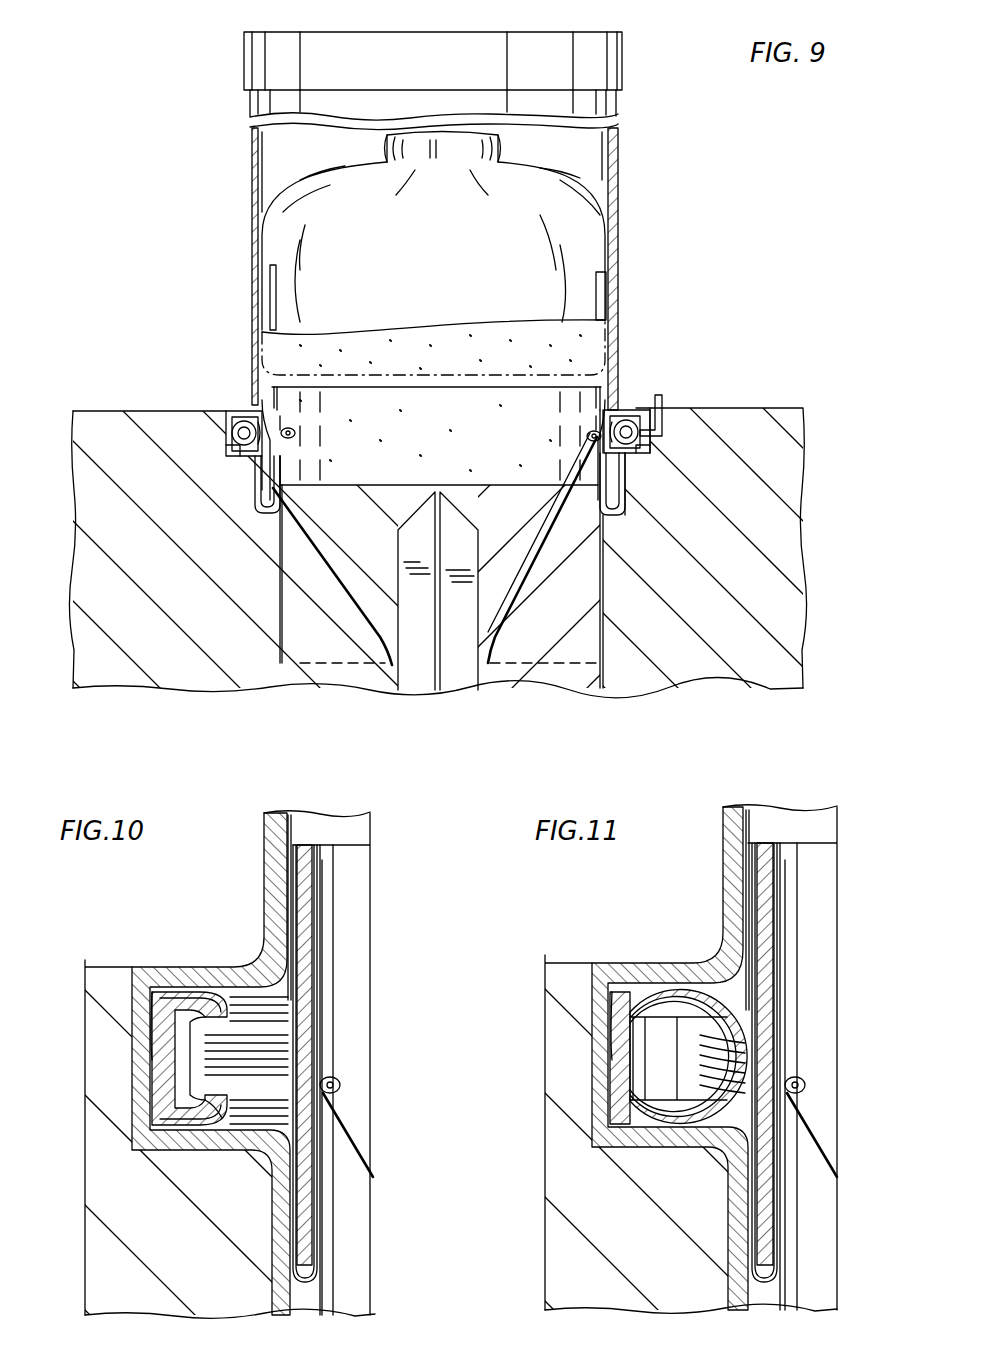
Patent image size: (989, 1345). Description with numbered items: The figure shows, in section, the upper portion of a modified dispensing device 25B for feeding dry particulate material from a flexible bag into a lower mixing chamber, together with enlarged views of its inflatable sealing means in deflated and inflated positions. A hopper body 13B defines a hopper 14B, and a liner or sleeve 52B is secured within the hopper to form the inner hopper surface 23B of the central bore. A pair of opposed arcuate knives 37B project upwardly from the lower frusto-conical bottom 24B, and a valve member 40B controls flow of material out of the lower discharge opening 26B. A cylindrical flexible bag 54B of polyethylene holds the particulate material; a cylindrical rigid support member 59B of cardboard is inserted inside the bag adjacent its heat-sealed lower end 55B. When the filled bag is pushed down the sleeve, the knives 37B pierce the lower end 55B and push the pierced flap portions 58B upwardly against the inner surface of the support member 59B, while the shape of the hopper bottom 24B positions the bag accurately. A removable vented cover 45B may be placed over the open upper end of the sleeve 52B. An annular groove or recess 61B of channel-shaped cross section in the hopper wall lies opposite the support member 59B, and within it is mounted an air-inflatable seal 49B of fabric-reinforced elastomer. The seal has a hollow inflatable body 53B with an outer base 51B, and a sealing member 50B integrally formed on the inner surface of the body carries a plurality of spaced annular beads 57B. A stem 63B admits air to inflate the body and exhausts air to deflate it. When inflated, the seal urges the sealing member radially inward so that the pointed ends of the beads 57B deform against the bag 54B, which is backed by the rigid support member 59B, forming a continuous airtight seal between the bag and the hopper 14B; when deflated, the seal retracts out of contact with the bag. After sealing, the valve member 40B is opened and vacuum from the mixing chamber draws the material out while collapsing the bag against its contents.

In FIG. 9, the hopper body 13B is at (787, 452).
In FIG. 10, the hopper body 13B is at (100, 1243).
In FIG. 11, the hopper body 13B is at (582, 1212).
In FIG. 9, the hopper 14B is at (618, 486).
In FIG. 9, the inner hopper surface 23B is at (255, 488).
In FIG. 9, the frusto-conical bottom 24B is at (347, 592).
In FIG. 9, the dispensing device 25B is at (760, 373).
In FIG. 9, the lower discharge opening 26B is at (478, 688).
In FIG. 9, the arcuate knives 37B is at (345, 553).
In FIG. 10, the arcuate knives 37B is at (345, 1178).
In FIG. 11, the arcuate knives 37B is at (790, 1197).
In FIG. 9, the valve member 40B is at (410, 673).
In FIG. 9, the removable cover 45B is at (262, 60).
In FIG. 9, the air-inflatable seal 49B is at (227, 447).
In FIG. 10, the air-inflatable seal 49B is at (157, 1100).
In FIG. 11, the air-inflatable seal 49B is at (608, 1082).
In FIG. 10, the sealing member 50B is at (180, 1088).
In FIG. 11, the sealing member 50B is at (770, 1023).
In FIG. 10, the outer base 51B is at (150, 1040).
In FIG. 11, the outer base 51B is at (617, 1043).
In FIG. 9, the liner or sleeve 52B is at (618, 286).
In FIG. 10, the hollow inflatable body 53B is at (214, 1125).
In FIG. 9, the flexible bag 54B is at (608, 152).
In FIG. 10, the flexible bag 54B is at (293, 828).
In FIG. 11, the flexible bag 54B is at (752, 830).
In FIG. 9, the lower end of bag 55B is at (452, 372).
In FIG. 10, the annular projections or beads 57B is at (287, 1073).
In FIG. 11, the annular projections or beads 57B is at (757, 1078).
In FIG. 9, the pierced flap portions 58B is at (292, 430).
In FIG. 10, the pierced flap portions 58B is at (341, 1090).
In FIG. 11, the pierced flap portions 58B is at (806, 1085).
In FIG. 9, the cylindrical rigid support member 59B is at (273, 306).
In FIG. 10, the cylindrical rigid support member 59B is at (307, 953).
In FIG. 11, the cylindrical rigid support member 59B is at (772, 895).
In FIG. 9, the annular groove or recess 61B is at (240, 410).
In FIG. 10, the annular groove or recess 61B is at (162, 1000).
In FIG. 11, the annular groove or recess 61B is at (620, 990).
In FIG. 9, the stem 63B is at (667, 398).